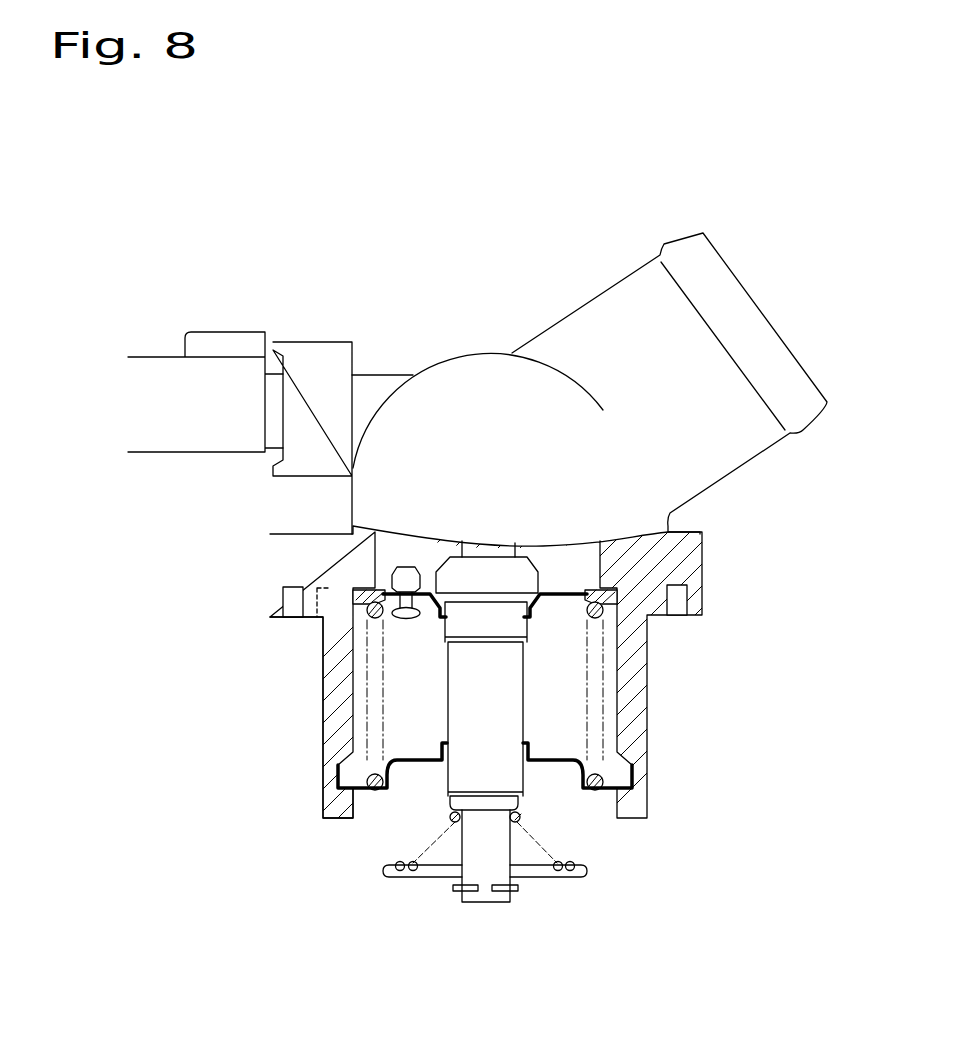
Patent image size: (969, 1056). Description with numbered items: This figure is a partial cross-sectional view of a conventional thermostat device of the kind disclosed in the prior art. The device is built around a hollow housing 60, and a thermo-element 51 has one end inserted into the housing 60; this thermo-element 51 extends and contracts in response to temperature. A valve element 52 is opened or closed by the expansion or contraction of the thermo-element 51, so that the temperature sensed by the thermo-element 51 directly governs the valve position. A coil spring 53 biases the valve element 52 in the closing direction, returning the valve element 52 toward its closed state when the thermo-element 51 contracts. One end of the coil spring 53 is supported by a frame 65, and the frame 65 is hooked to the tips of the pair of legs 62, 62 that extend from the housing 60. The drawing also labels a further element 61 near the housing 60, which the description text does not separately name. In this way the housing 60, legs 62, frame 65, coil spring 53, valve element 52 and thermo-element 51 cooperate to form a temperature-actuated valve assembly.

The thermo-element 51 is at (510, 778).
The valve element 52 is at (370, 612).
The coil spring 53 is at (372, 635).
The housing 60 is at (652, 725).
The seal 61 is at (353, 590).
The leg 62 is at (330, 740).
The frame 65 is at (413, 778).